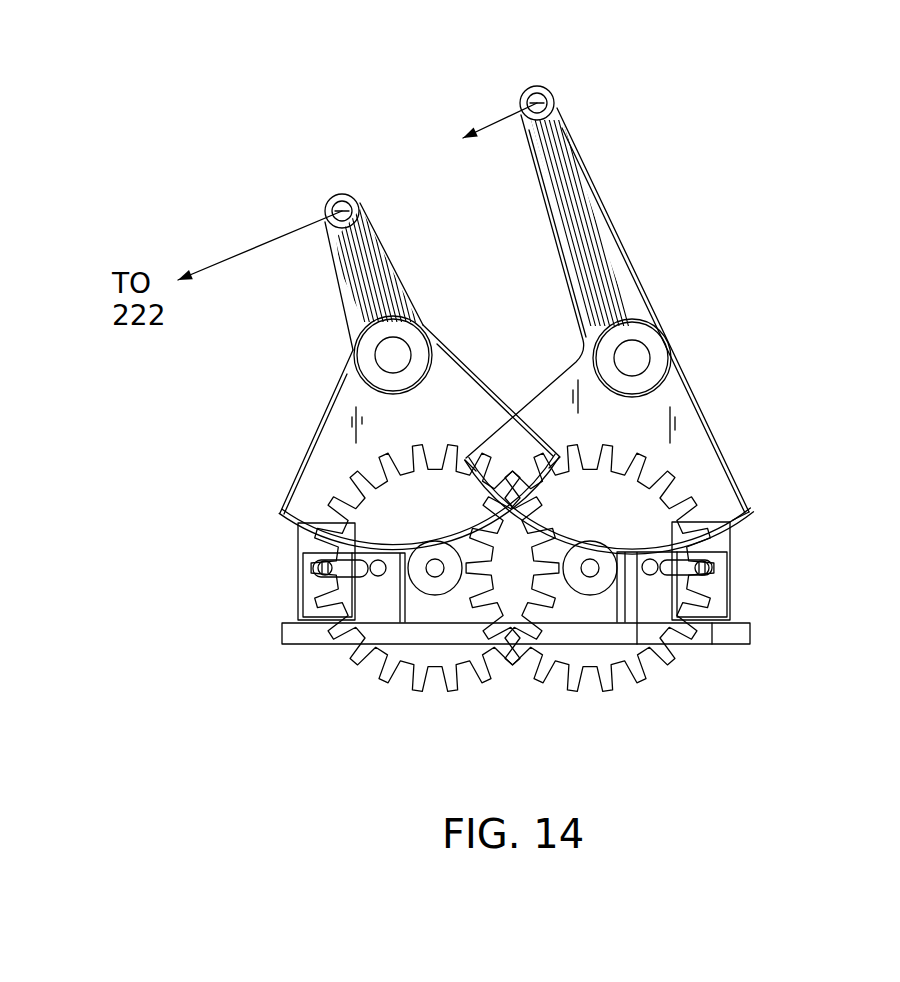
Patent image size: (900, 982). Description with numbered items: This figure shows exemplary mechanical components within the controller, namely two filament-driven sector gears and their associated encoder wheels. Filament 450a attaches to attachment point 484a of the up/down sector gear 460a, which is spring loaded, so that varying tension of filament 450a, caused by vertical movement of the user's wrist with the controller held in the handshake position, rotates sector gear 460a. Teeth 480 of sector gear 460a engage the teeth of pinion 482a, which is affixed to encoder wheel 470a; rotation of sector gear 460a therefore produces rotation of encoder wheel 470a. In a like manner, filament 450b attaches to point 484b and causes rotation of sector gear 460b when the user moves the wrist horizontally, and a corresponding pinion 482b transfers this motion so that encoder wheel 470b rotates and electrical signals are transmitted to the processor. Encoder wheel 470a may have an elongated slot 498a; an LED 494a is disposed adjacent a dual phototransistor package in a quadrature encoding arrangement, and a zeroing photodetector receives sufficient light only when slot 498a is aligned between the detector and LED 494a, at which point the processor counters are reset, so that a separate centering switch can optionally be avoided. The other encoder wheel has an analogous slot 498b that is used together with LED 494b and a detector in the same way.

The filament 450a is at (505, 118).
The filament 450b is at (284, 242).
The attachment point 484a is at (546, 88).
The attachment point 484b is at (360, 205).
The up/down sector gear 460a is at (708, 483).
The sector gear 460b is at (322, 438).
The teeth 480 is at (283, 517).
The encoder wheel 470a is at (620, 657).
The encoder wheel 470b is at (447, 665).
The pinion 482a is at (575, 580).
The gear shaft 482b is at (428, 588).
The LED 494a is at (723, 587).
The LED 494b is at (298, 574).
The elongated slot 498a is at (690, 565).
The slot 498b is at (300, 608).